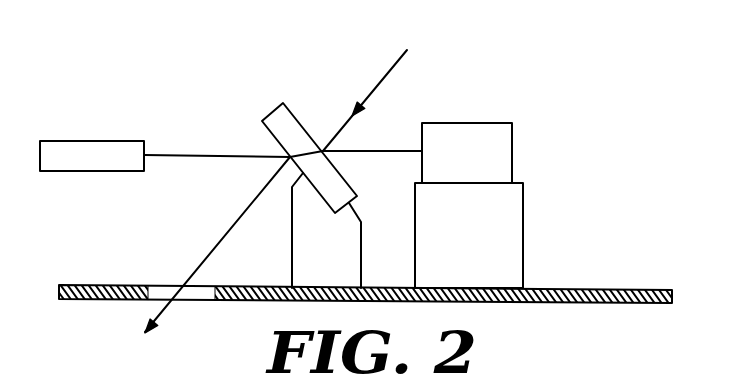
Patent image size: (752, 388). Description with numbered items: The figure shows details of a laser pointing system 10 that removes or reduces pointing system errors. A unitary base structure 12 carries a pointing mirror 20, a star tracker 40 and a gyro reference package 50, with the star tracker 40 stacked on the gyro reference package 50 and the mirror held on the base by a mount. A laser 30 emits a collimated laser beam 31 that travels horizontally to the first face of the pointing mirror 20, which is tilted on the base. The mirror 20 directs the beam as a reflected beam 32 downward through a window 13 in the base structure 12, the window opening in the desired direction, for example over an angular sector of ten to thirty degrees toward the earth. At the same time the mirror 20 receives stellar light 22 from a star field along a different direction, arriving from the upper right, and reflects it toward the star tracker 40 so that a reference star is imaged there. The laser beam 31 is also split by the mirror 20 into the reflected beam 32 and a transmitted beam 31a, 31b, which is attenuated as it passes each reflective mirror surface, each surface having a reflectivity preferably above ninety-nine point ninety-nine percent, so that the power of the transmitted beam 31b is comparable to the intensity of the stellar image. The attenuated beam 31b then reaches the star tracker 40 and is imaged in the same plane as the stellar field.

The laser pointing system 10 is at (290, 62).
The unitary base structure 12 is at (604, 291).
The window 13 is at (165, 287).
The pointing mirror 20 is at (325, 187).
The stellar light 22 is at (383, 77).
The laser 30 is at (97, 141).
The laser beam 31 is at (210, 155).
The transmitted beam 31a is at (303, 150).
The transmitted beam 31b is at (378, 150).
The reflected beam 32 is at (230, 228).
The star tracker 40 is at (481, 163).
The gyro reference package 50 is at (478, 246).